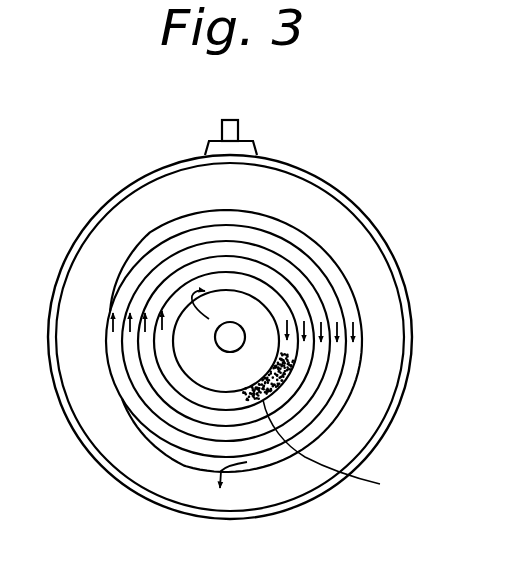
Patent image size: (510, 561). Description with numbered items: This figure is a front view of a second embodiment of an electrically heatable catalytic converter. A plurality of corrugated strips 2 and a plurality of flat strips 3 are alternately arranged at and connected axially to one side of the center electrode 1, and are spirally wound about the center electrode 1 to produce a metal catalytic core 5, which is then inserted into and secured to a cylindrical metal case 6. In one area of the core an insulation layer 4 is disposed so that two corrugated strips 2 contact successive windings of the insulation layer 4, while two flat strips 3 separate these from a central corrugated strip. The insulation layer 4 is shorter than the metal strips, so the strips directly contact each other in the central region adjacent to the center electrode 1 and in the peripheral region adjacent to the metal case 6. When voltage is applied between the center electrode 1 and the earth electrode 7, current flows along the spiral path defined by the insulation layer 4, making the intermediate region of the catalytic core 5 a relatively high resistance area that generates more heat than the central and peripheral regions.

The center electrode 1 is at (235, 332).
The corrugated strips 2 is at (289, 372).
The flat strips 3 is at (329, 451).
The insulation layer 4 is at (140, 427).
The metal catalytic core 5 is at (99, 243).
The cylindrical metal case 6 is at (140, 497).
The earth electrode 7 is at (231, 134).